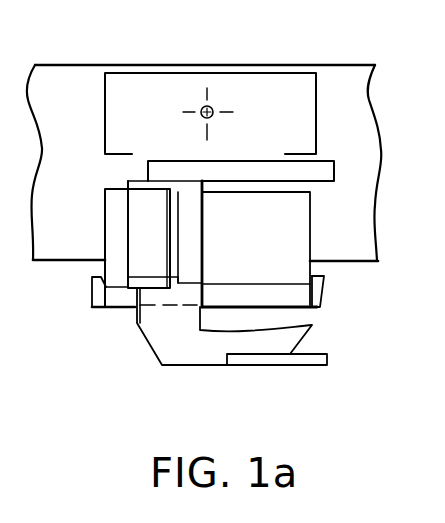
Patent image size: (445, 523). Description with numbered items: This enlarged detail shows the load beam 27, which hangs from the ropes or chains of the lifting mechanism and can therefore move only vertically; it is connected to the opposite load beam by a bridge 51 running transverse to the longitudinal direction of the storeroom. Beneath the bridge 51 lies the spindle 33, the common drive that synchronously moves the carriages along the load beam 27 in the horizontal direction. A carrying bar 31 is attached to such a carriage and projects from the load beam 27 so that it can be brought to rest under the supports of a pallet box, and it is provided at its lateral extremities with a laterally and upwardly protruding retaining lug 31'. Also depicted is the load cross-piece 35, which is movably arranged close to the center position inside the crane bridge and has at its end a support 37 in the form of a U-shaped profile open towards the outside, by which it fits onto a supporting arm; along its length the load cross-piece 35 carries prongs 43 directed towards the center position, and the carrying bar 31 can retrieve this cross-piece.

The load beam 27 is at (343, 80).
The bridge 51 is at (270, 73).
The spindle 33 is at (203, 106).
The load cross-piece 35 is at (143, 253).
The support 37 is at (298, 233).
The carrying bar 31 is at (332, 308).
The retaining lug 31' is at (353, 291).
The prong 43 is at (184, 338).